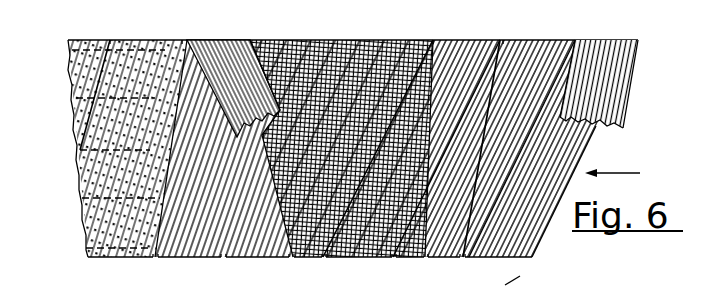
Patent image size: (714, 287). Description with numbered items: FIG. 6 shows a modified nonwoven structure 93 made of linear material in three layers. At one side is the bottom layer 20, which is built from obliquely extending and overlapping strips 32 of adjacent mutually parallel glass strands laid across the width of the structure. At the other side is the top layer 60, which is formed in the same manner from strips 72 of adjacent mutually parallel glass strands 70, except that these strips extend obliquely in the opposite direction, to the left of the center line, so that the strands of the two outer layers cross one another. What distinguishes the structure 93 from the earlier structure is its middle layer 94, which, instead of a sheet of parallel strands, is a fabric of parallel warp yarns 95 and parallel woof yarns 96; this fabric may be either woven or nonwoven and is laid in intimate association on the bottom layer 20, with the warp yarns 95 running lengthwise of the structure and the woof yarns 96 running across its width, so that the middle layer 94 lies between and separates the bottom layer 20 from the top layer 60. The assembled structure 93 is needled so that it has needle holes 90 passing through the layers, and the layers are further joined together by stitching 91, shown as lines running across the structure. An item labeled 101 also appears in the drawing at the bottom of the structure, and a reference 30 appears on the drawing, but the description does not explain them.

The bottom layer 20 is at (509, 11).
The top layer 30 is at (540, 53).
The strips 32 is at (590, 141).
The top layer 60 is at (152, 33).
The glass strands 70 is at (225, 256).
The strips 72 is at (211, 39).
The needle holes 90 is at (194, 22).
The stitching 91 is at (100, 50).
The modified nonwoven structure 93 is at (280, 33).
The middle layer 94 is at (328, 19).
The warp yarns 95 is at (340, 256).
The woof yarns 96 is at (427, 42).
The bottom element 101 is at (522, 281).